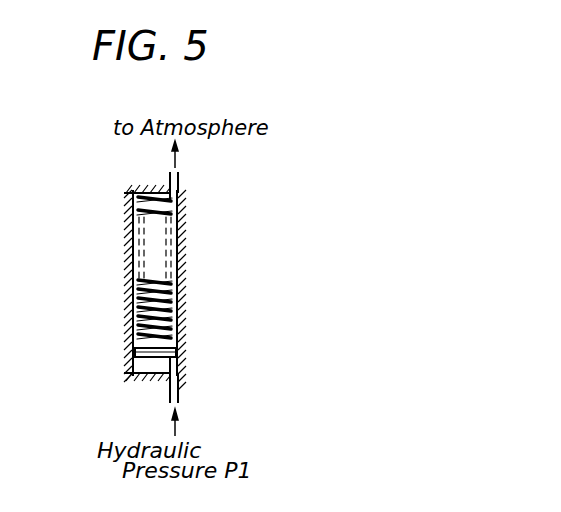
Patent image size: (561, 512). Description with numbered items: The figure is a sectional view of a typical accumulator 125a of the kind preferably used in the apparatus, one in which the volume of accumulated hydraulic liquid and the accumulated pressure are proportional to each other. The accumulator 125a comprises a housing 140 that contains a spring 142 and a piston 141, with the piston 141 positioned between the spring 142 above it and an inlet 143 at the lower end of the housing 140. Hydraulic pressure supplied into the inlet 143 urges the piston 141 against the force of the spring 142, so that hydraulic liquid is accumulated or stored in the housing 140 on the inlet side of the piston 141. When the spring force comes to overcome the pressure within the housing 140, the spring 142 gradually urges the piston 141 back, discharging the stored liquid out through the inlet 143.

The accumulator 125a is at (124, 253).
The housing 140 is at (181, 246).
The spring 142 is at (182, 302).
The piston 141 is at (176, 354).
The inlet 143 is at (181, 380).